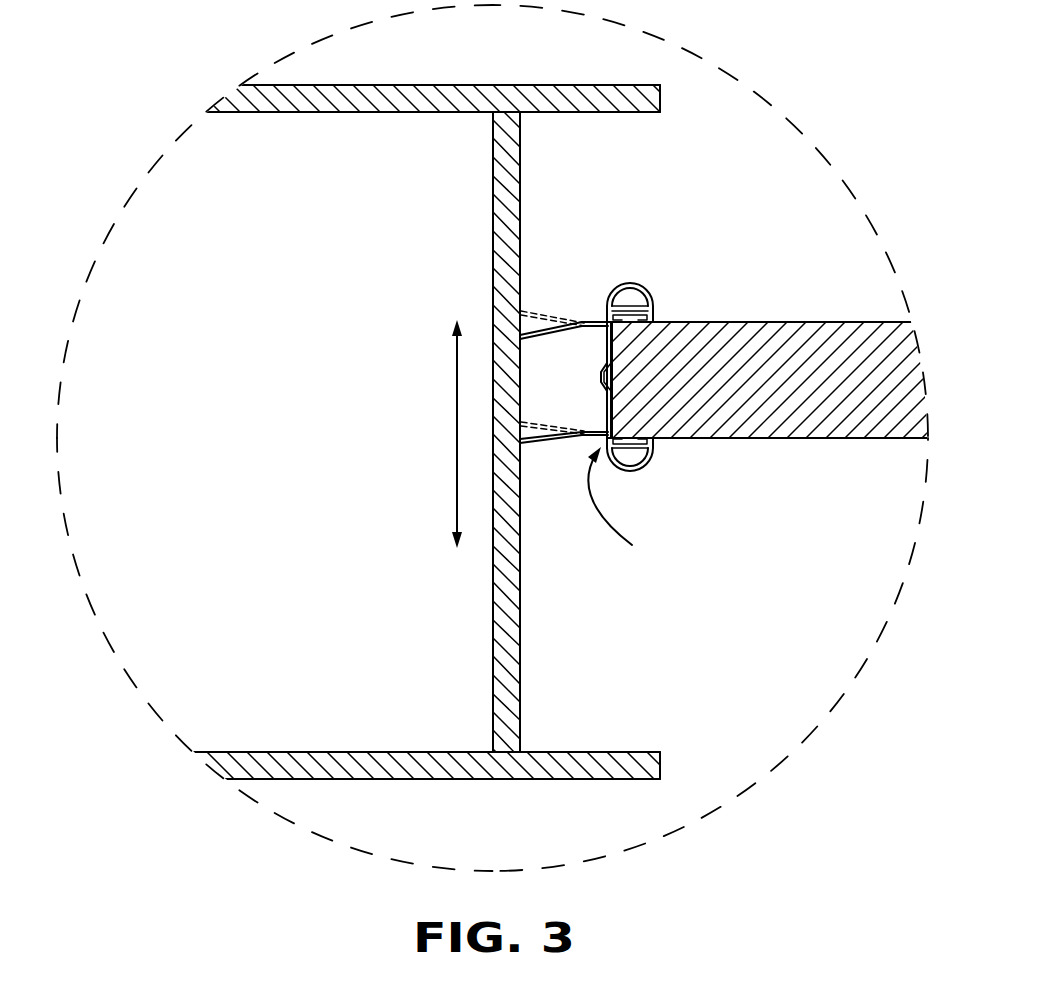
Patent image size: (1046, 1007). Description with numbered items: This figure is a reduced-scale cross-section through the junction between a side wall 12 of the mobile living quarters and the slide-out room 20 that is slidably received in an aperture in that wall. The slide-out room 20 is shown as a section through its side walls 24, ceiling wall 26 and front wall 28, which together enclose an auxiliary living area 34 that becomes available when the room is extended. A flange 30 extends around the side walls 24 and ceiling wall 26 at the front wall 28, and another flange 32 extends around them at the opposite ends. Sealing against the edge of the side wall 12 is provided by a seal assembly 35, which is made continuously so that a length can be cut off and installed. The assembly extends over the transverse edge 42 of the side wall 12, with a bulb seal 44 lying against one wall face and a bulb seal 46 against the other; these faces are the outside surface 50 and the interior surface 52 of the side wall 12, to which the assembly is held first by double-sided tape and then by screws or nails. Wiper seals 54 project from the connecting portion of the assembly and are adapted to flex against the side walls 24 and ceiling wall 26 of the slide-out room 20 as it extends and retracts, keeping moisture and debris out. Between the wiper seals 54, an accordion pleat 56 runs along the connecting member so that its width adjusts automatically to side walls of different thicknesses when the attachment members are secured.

The side wall 12 is at (798, 418).
The slide-out room 20 is at (418, 136).
The side walls 24 is at (513, 687).
The ceiling wall 26 is at (350, 95).
The front wall 28 is at (357, 763).
The flange 30 is at (608, 750).
The flange 32 is at (604, 95).
The auxiliary living area 34 is at (288, 429).
The seal assembly 35 is at (622, 517).
The transverse edge 42 is at (612, 374).
The bulb seal 44 is at (642, 283).
The bulb seal 46 is at (645, 467).
The outside surface 50 is at (758, 438).
The interior surface 52 is at (850, 292).
The wiper seals 54 is at (542, 316).
The accordion pleat 56 is at (600, 376).